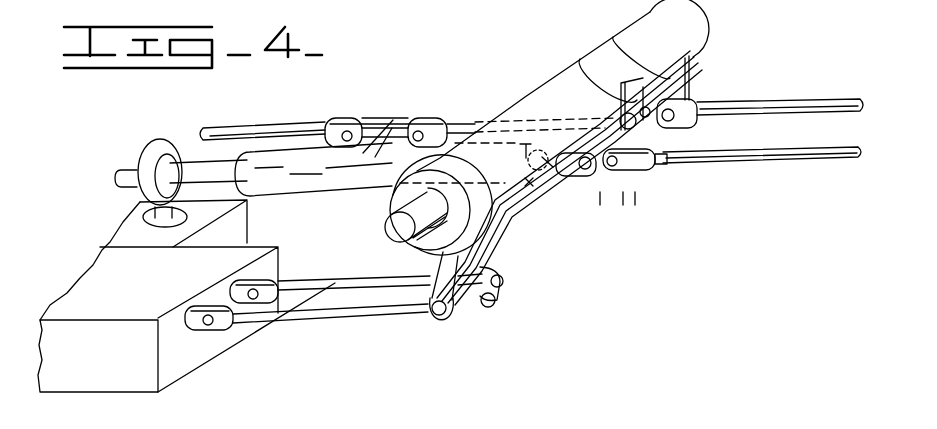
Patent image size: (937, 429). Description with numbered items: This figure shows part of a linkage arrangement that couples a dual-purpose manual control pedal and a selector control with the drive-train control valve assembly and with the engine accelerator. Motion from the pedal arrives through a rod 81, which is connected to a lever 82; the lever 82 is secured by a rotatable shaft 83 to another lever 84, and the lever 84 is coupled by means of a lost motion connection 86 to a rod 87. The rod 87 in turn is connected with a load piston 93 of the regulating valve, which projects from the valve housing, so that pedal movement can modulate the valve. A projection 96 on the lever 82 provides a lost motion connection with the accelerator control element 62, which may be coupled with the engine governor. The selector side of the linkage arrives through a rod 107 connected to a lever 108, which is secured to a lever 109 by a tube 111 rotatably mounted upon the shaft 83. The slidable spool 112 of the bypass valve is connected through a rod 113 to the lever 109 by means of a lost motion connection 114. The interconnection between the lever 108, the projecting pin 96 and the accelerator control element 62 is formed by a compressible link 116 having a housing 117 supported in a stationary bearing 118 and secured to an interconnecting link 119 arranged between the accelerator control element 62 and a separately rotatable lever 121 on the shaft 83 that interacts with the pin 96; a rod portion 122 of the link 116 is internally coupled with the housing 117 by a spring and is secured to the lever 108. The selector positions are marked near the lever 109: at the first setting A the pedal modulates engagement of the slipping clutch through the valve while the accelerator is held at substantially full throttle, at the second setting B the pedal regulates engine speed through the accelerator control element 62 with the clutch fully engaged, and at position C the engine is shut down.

The accelerator control element 62 is at (209, 128).
The rod 81 is at (810, 100).
The lever 82 is at (687, 78).
The rotatable shaft 83 is at (390, 227).
The lever 84 is at (421, 266).
The lost motion connection 86 is at (446, 330).
The rod 87 is at (312, 315).
The load piston 93 is at (190, 305).
The projection 96 is at (652, 124).
The rod 107 is at (786, 148).
The lever 108 is at (591, 177).
The lever 109 is at (490, 242).
The tube 111 is at (547, 90).
The slidable spool 112 is at (236, 278).
The rod 113 is at (316, 272).
The lost motion connection 114 is at (491, 300).
The compressible link 116 is at (304, 200).
The housing 117 is at (281, 169).
The stationary bearing 118 is at (167, 146).
The interconnecting link 119 is at (370, 127).
The separately rotatable lever 121 is at (660, 153).
The rod portion 122 is at (572, 168).
The first setting A is at (602, 211).
The second setting B is at (622, 211).
The position C is at (637, 211).